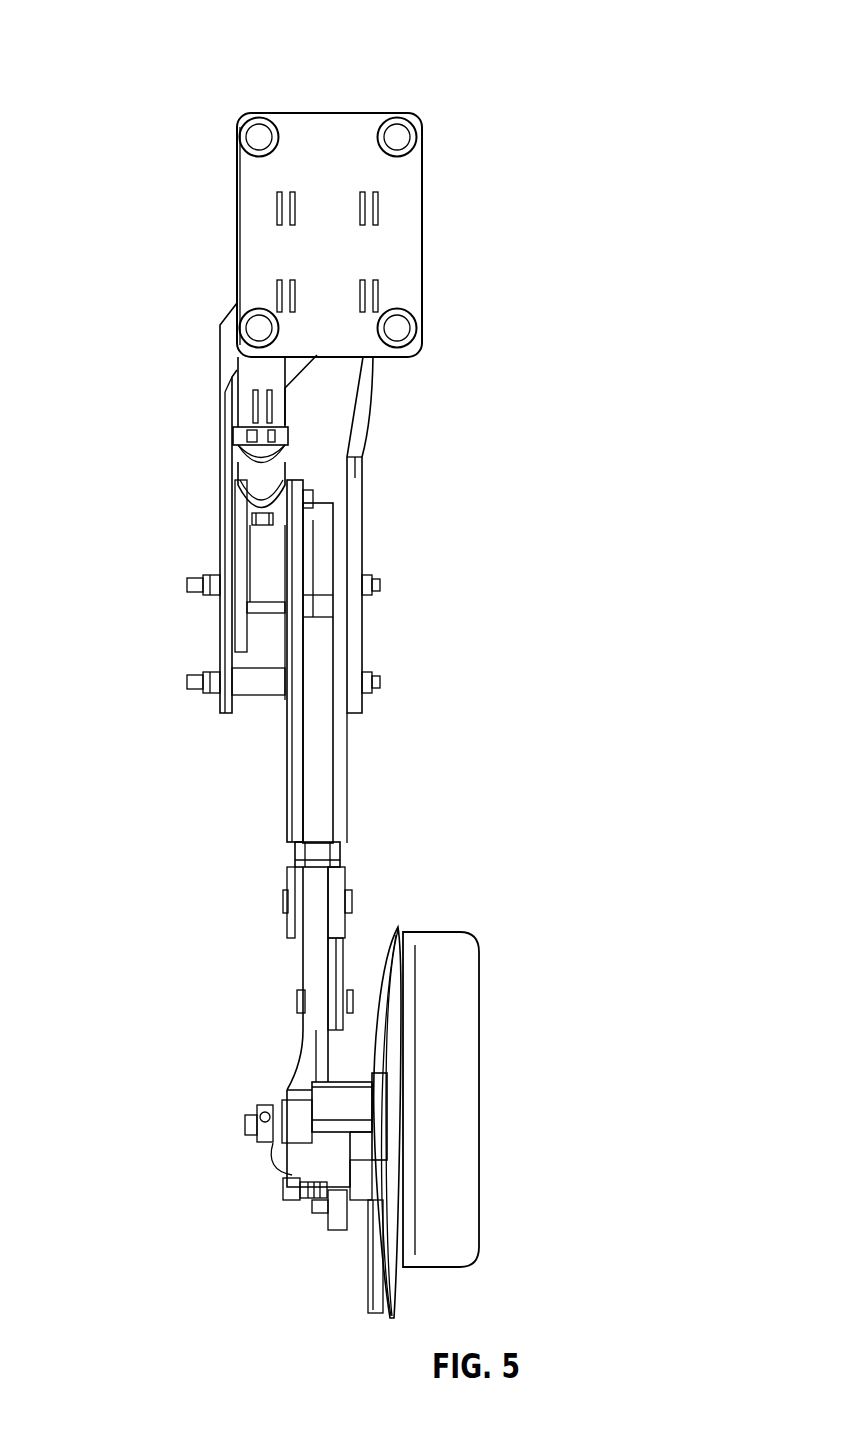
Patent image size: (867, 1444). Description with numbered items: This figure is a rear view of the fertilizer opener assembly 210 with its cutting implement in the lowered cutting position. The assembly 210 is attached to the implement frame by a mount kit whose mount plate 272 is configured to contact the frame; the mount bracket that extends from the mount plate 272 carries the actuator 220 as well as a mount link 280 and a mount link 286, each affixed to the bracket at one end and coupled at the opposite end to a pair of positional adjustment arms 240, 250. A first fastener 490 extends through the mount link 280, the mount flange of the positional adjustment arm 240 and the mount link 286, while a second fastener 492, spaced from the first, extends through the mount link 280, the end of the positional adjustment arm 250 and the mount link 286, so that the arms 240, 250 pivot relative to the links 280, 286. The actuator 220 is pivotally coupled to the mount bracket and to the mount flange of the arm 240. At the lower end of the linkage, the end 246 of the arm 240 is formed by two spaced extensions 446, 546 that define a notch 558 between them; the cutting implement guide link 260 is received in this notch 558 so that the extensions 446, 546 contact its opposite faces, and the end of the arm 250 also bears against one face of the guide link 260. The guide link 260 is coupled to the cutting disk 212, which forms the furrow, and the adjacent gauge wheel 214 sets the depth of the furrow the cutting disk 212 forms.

The fertilizer opener assembly 210 is at (398, 64).
The mount plate 272 is at (408, 177).
The mount link 280 is at (222, 425).
The actuator 220 is at (252, 470).
The mount link 286 is at (355, 475).
The first fastener 490 is at (338, 574).
The second fastener 492 is at (257, 677).
The positional adjustment arm 240 is at (295, 762).
The end 246 is at (295, 838).
The extension 446 is at (293, 882).
The notch 558 is at (337, 877).
The extension 546 is at (340, 890).
The cutting implement guide link 260 is at (313, 963).
The positional adjustment arm 250 is at (348, 945).
The cutting disk 212 is at (385, 927).
The gauge wheel 214 is at (453, 943).